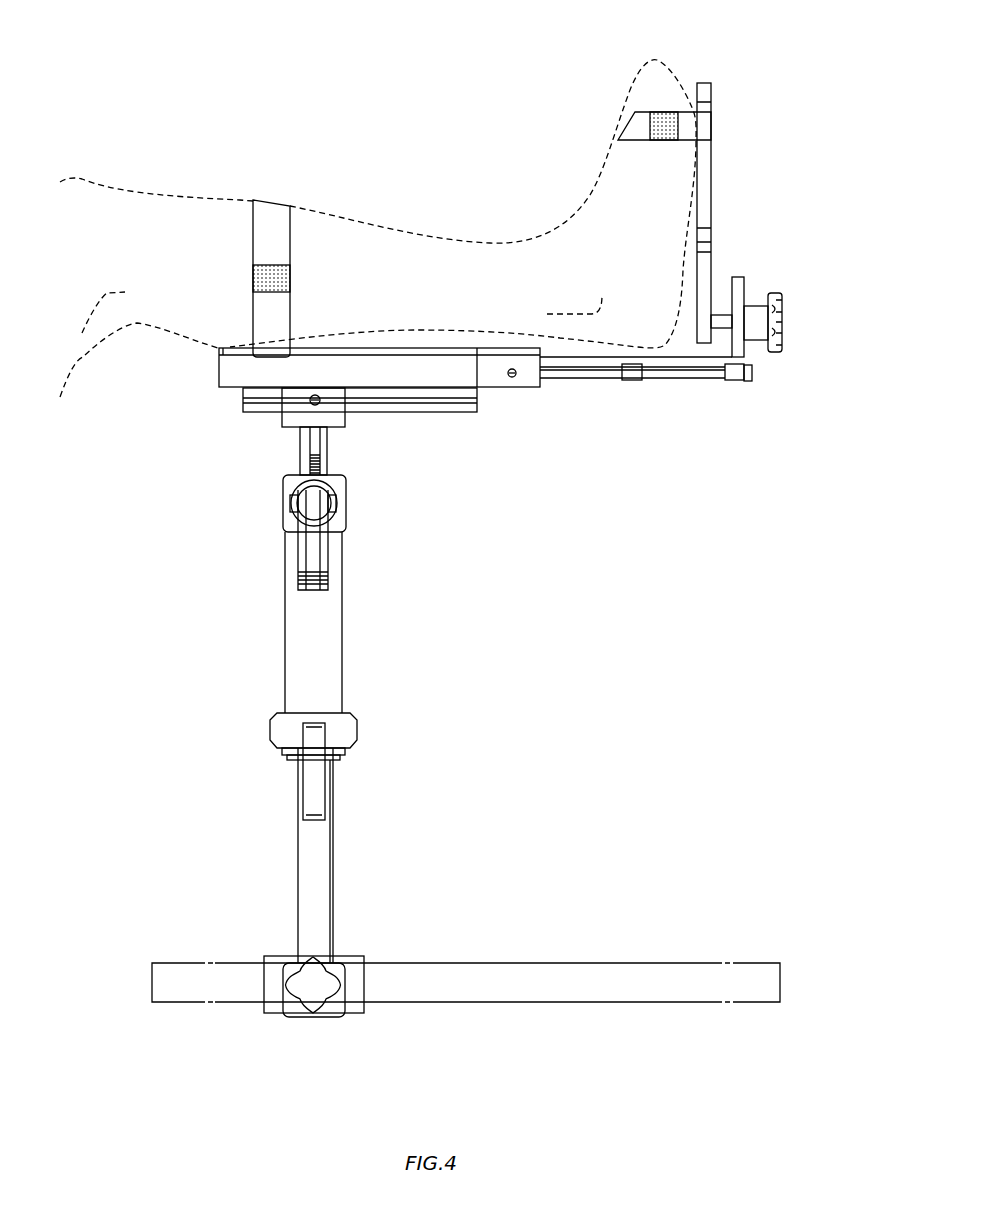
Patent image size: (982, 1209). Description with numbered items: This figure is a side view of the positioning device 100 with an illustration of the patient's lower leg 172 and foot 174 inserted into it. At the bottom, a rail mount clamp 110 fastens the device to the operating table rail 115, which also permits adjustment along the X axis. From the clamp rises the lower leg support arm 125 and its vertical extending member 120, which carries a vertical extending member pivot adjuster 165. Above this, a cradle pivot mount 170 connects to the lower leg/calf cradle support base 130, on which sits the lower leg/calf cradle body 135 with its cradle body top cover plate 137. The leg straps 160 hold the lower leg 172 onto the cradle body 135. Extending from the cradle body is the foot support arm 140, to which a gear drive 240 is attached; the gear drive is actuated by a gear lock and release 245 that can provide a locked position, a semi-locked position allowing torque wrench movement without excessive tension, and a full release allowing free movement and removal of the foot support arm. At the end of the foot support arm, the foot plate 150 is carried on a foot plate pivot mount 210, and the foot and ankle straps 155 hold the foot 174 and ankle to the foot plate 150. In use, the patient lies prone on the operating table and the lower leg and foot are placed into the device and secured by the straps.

The positioning device 100 is at (757, 90).
The rail mount clamp 110 is at (360, 960).
The operating table rail 115 is at (547, 963).
The lower leg support arm vertical extending member 120 is at (285, 620).
The lower leg support arm 125 is at (298, 850).
The lower leg/calf cradle support base 130 is at (313, 417).
The lower leg/calf cradle body 135 is at (218, 378).
The cradle body top cover plate 137 is at (217, 350).
The foot support arm 140 is at (688, 357).
The foot plate 150 is at (711, 183).
The foot/ankle strap 155 is at (630, 125).
The leg strap 160 is at (285, 200).
The vertical extending member pivot adjuster 165 is at (340, 478).
The cradle pivot mount 170 is at (312, 452).
The lower leg 172 is at (353, 225).
The foot 174 is at (593, 190).
The foot plate pivot mount 210 is at (783, 320).
The gear drive 240 is at (753, 370).
The gear lock and release 245 is at (515, 378).